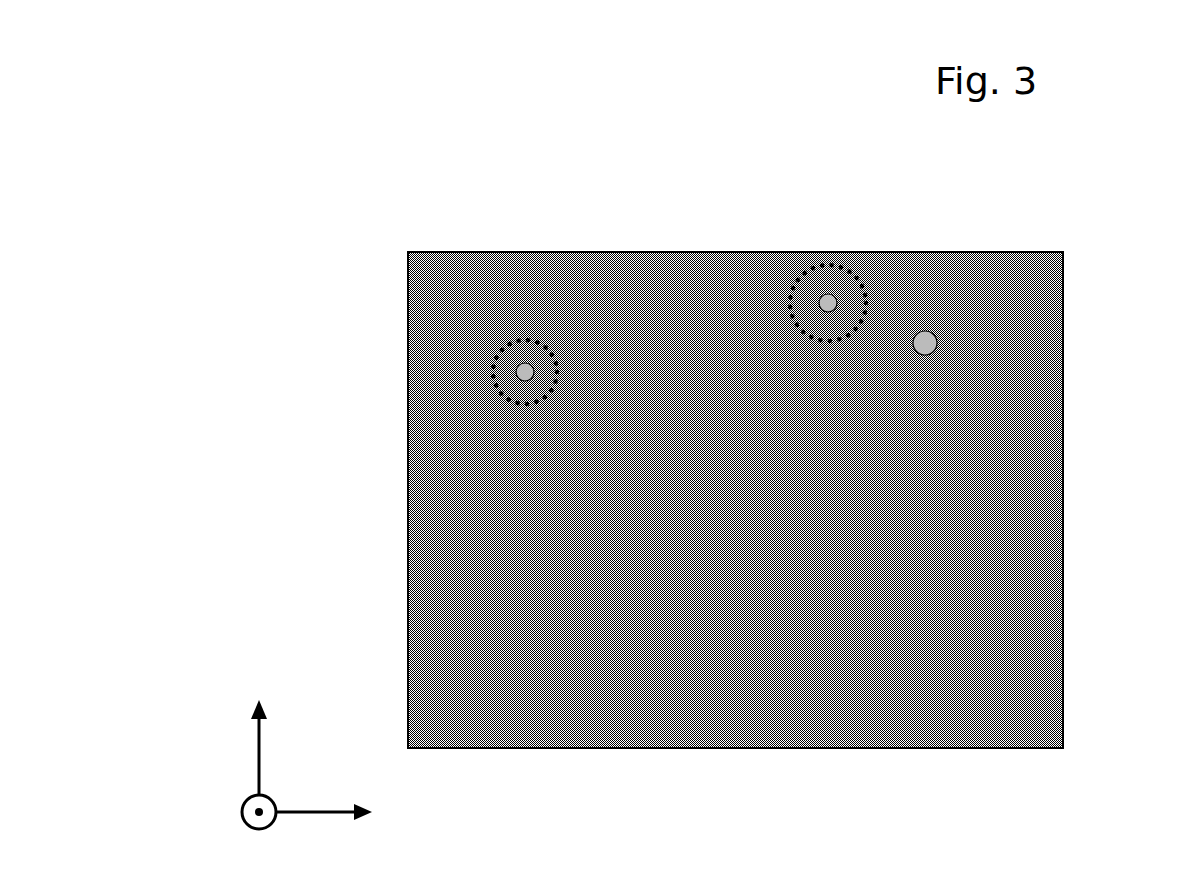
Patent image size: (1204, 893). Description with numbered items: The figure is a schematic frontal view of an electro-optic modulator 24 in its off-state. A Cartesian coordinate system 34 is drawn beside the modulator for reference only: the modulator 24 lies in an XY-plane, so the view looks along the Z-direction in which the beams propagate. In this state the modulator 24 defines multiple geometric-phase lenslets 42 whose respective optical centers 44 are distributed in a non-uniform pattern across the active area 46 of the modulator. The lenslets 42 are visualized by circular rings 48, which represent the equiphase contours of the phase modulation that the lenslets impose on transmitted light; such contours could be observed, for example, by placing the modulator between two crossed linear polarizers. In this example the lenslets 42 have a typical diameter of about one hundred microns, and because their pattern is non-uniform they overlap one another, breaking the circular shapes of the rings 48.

The electro-optic modulator 24 is at (1062, 252).
The geometric-phase lenslets 42 is at (527, 340).
The optical centers 44 is at (530, 367).
The active area 46 is at (790, 492).
The circular rings 48 is at (932, 338).
The Cartesian coordinate system 34 is at (384, 830).